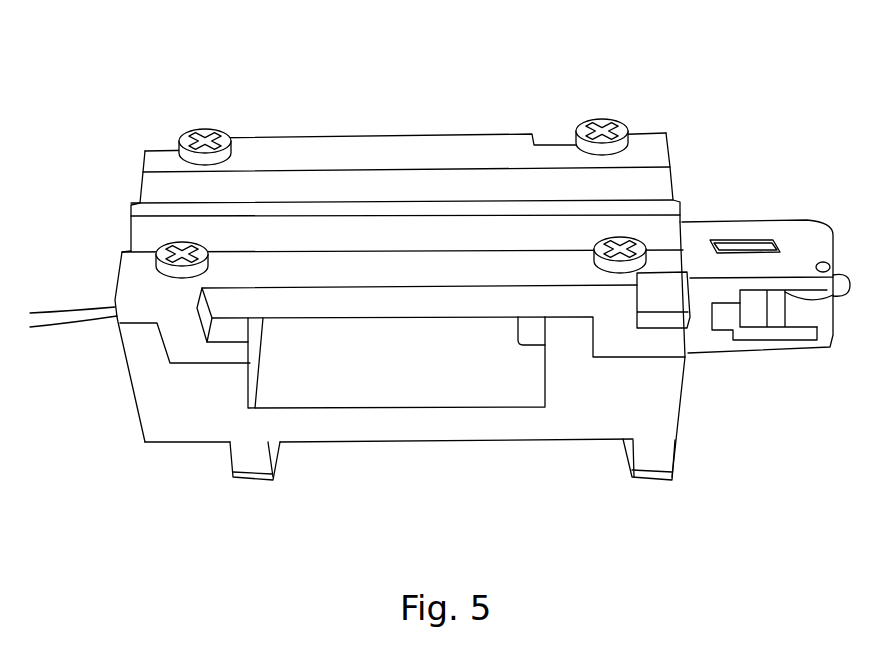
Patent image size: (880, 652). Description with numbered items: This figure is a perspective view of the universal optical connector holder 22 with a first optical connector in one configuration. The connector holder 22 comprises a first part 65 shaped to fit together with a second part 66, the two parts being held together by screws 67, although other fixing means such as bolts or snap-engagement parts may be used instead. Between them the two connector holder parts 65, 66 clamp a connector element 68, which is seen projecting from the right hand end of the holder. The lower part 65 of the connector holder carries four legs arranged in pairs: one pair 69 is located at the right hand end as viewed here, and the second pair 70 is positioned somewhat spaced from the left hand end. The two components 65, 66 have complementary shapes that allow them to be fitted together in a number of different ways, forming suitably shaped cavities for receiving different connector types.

The connector holder 22 is at (398, 116).
The first part 65 is at (387, 427).
The second part 66 is at (327, 153).
The screws 67 is at (181, 141).
The connector element 68 is at (793, 233).
The pair of legs 69 is at (657, 450).
The second pair of legs 70 is at (247, 458).